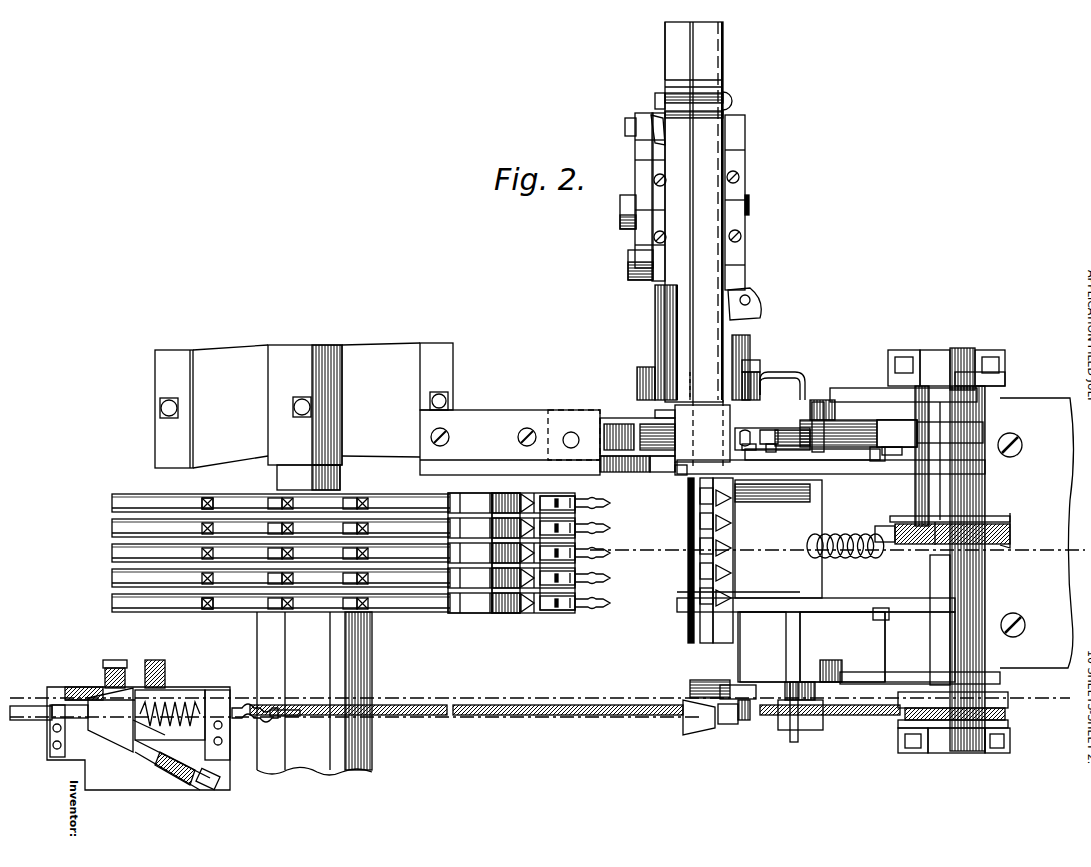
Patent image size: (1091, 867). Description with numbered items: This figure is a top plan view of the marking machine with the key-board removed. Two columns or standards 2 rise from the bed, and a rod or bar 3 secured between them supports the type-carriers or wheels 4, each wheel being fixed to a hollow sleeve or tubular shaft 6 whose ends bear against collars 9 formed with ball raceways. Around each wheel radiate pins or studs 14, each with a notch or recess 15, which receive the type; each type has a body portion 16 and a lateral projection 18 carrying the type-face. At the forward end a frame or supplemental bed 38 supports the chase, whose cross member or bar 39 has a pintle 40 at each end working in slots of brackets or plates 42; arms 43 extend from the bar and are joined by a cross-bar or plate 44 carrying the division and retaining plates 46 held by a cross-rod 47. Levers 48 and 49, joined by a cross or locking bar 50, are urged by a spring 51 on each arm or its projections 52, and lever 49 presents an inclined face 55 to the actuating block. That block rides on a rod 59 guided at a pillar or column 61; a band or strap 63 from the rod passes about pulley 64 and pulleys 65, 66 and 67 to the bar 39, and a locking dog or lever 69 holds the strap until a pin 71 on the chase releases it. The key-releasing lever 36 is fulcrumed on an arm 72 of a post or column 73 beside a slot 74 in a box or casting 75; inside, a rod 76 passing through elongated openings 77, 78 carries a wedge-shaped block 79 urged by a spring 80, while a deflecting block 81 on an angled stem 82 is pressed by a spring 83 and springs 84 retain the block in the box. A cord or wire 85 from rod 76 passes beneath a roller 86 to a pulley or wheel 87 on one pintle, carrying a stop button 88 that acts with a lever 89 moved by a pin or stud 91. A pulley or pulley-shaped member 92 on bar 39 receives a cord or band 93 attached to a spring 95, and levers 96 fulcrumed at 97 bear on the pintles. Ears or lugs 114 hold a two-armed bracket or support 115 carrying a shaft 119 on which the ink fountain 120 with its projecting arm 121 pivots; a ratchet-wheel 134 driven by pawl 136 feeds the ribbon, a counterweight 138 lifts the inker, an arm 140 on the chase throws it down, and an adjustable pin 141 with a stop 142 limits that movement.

The columns or standards 2 is at (304, 416).
The rod or bar 3 is at (837, 533).
The type-carriers or wheels 4 is at (395, 604).
The hollow sleeve or tubular shaft 6 is at (352, 660).
The collars 9 is at (493, 553).
The pins or studs 14 is at (300, 612).
The notch or recess 15 is at (570, 612).
The body portion 16 is at (470, 615).
The lateral projection 18 is at (745, 752).
The lever 36 is at (160, 688).
The frame or supplemental bed 38 is at (833, 647).
The cross member or bar 39 is at (960, 598).
The pintle 40 is at (952, 735).
The brackets or plates 42 is at (877, 390).
The arms 43 is at (925, 476).
The cross-bar or plate 44 is at (800, 495).
The division and retaining plates 46 is at (700, 565).
The cross-rod 47 is at (745, 600).
The lever 48 is at (826, 612).
The lever 49 is at (848, 462).
The cross or locking bar 50 is at (690, 545).
The spring 51 is at (880, 620).
The projections 52 is at (878, 463).
The inclined face 55 is at (676, 467).
The rod 59 is at (565, 434).
The pillar or column 61 is at (482, 466).
The band or strap 63 is at (838, 432).
The pulley 64 is at (605, 438).
The pulley 65 is at (642, 468).
The pulley 66 is at (773, 452).
The pulley 67 is at (885, 450).
The locking dog or lever 69 is at (752, 450).
The pin 71 is at (812, 400).
The arm 72 is at (110, 682).
The post or column 73 is at (155, 778).
The slot 74 is at (185, 692).
The box or casting 75 is at (84, 690).
The rod 76 is at (108, 745).
The elongated opening 77 is at (52, 710).
The elongated opening 78 is at (212, 700).
The wedge-shaped block 79 is at (128, 745).
The spring 80 is at (172, 706).
The deflecting block 81 is at (150, 760).
The stem 82 is at (208, 786).
The spring 83 is at (178, 785).
The springs 84 is at (55, 724).
The cord or wire 85 is at (494, 716).
The roller 86 is at (798, 712).
The pulley or wheel 87 is at (925, 716).
The stop button 88 is at (693, 722).
The lever 89 is at (730, 724).
The pin or stud 91 is at (776, 712).
The pulley or pulley-shaped member 92 is at (970, 572).
The cord or band 93 is at (1010, 530).
The spring 95 is at (852, 545).
The levers 96 is at (1000, 379).
The fulcrum 97 is at (955, 354).
The ears or lugs 114 is at (752, 350).
The two-armed bracket or support 115 is at (662, 356).
The shaft 119 is at (747, 210).
The ink fountain 120 is at (720, 148).
The projecting arm 121 is at (704, 377).
The ratchet-wheel 134 is at (640, 213).
The pawl 136 is at (642, 152).
The counterweight 138 is at (673, 63).
The arm 140 is at (705, 422).
The adjustable pin 141 is at (748, 296).
The stop 142 is at (765, 378).